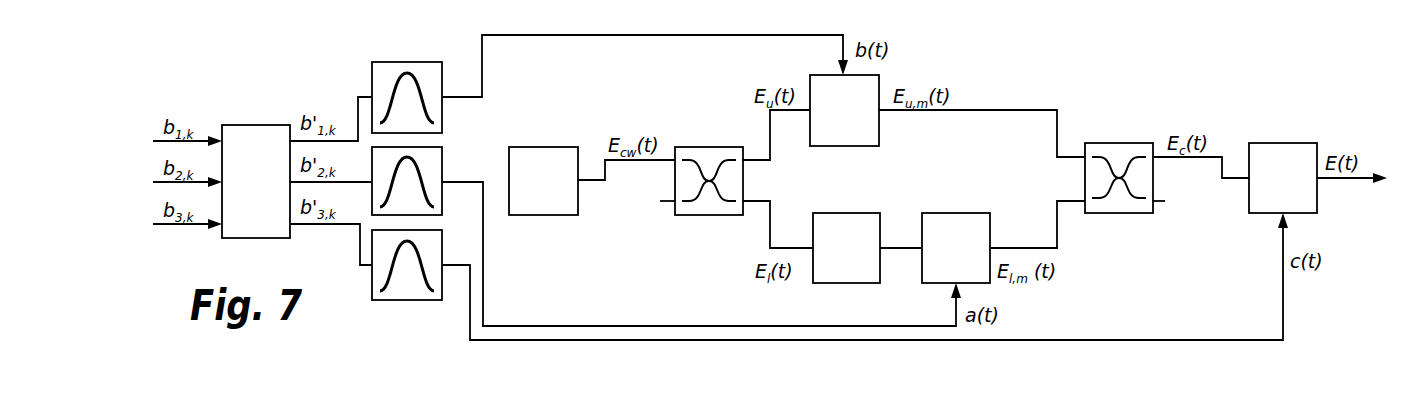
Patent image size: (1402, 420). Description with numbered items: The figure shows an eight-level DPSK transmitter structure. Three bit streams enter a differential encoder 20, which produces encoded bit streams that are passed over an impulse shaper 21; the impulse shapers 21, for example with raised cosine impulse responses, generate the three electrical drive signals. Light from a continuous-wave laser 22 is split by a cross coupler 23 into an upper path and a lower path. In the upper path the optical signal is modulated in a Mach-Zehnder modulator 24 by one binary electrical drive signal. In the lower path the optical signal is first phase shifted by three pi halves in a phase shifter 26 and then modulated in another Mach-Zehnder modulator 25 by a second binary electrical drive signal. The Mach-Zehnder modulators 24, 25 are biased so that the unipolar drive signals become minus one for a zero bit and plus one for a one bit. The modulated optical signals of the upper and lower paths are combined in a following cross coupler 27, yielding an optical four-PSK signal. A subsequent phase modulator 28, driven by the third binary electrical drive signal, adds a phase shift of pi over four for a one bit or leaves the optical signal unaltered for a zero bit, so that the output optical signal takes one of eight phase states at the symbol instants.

The differential encoder 20 is at (253, 138).
The impulse shaper 21 is at (410, 292).
The continuous-wave laser 22 is at (545, 205).
The cross coupler 23 is at (708, 207).
The Mach-Zehnder modulator 24 is at (872, 134).
The Mach-Zehnder modulator 25 is at (976, 220).
The phase shifter 26 is at (838, 219).
The cross coupler 27 is at (1120, 151).
The phase modulator 28 is at (1286, 151).